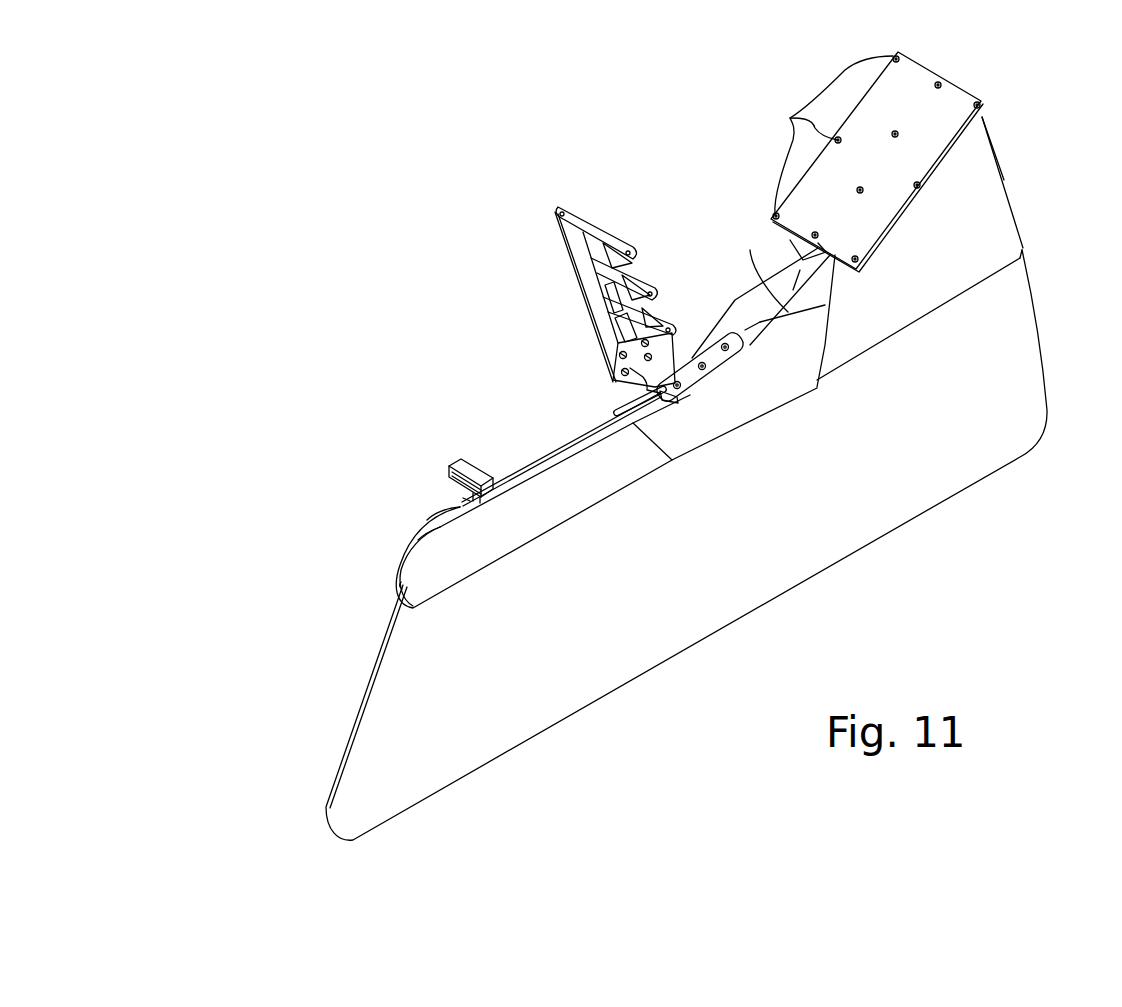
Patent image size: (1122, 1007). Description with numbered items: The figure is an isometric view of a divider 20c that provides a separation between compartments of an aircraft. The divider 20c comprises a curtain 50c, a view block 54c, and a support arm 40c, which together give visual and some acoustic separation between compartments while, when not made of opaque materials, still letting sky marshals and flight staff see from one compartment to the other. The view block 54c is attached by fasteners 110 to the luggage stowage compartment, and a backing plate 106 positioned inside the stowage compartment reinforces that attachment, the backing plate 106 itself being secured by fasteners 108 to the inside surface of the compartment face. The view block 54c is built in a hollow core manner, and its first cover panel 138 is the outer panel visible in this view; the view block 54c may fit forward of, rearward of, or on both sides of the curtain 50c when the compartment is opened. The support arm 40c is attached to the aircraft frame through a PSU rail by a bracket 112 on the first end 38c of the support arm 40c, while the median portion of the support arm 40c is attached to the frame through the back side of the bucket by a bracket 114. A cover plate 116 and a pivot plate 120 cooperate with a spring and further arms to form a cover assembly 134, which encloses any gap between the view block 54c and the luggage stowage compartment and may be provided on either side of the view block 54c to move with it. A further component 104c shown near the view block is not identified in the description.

The divider 20c is at (296, 642).
The first end of the support arm 38c is at (409, 543).
The support arm 40c is at (505, 558).
The curtain 50c is at (1047, 410).
The view block 54c is at (1025, 252).
The housing 104c is at (1026, 247).
The backing plate 106 is at (983, 117).
The fasteners 108 is at (790, 118).
The fasteners 110 is at (938, 88).
The bracket 112 is at (483, 477).
The bracket 114 is at (612, 357).
The cover plate 116 is at (725, 318).
The pivot plate 120 is at (732, 313).
The cover assembly 134 is at (641, 242).
The first cover panel 138 is at (1004, 180).